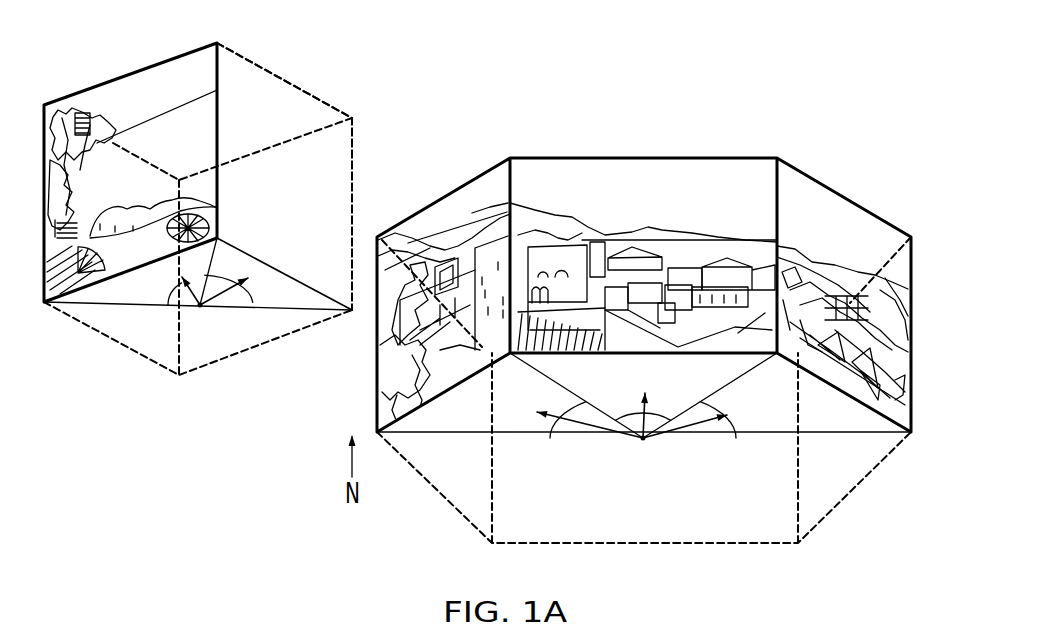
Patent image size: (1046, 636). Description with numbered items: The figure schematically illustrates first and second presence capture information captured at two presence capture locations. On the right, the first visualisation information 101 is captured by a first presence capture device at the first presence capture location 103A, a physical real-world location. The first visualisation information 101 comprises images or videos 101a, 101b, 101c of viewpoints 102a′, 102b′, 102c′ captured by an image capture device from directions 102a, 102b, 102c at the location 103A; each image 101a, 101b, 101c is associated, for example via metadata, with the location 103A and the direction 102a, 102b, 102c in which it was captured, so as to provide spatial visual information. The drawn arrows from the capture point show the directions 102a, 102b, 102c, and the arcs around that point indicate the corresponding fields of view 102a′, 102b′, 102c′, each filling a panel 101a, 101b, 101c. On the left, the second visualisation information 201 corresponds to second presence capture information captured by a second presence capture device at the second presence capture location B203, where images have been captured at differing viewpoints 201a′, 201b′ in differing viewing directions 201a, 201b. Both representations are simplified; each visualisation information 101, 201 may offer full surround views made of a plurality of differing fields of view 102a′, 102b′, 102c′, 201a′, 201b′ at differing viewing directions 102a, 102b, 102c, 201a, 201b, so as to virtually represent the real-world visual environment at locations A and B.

The second visualisation information 201 is at (356, 312).
The viewing direction 201a is at (160, 102).
The viewing direction 201b is at (282, 107).
The viewpoint 201a′ is at (198, 308).
The viewpoint 201b′ is at (203, 308).
The second presence capture location B B203 is at (201, 310).
The first visualisation information 101 is at (920, 158).
The image 101a is at (477, 200).
The image 101b is at (643, 178).
The image 101c is at (817, 200).
The direction 102a is at (555, 414).
The direction 102b is at (646, 399).
The direction 102c is at (721, 415).
The viewpoint 102a′ is at (577, 430).
The viewpoint 102b′ is at (655, 423).
The viewpoint 102c′ is at (697, 430).
The first presence capture location A 103A is at (643, 440).